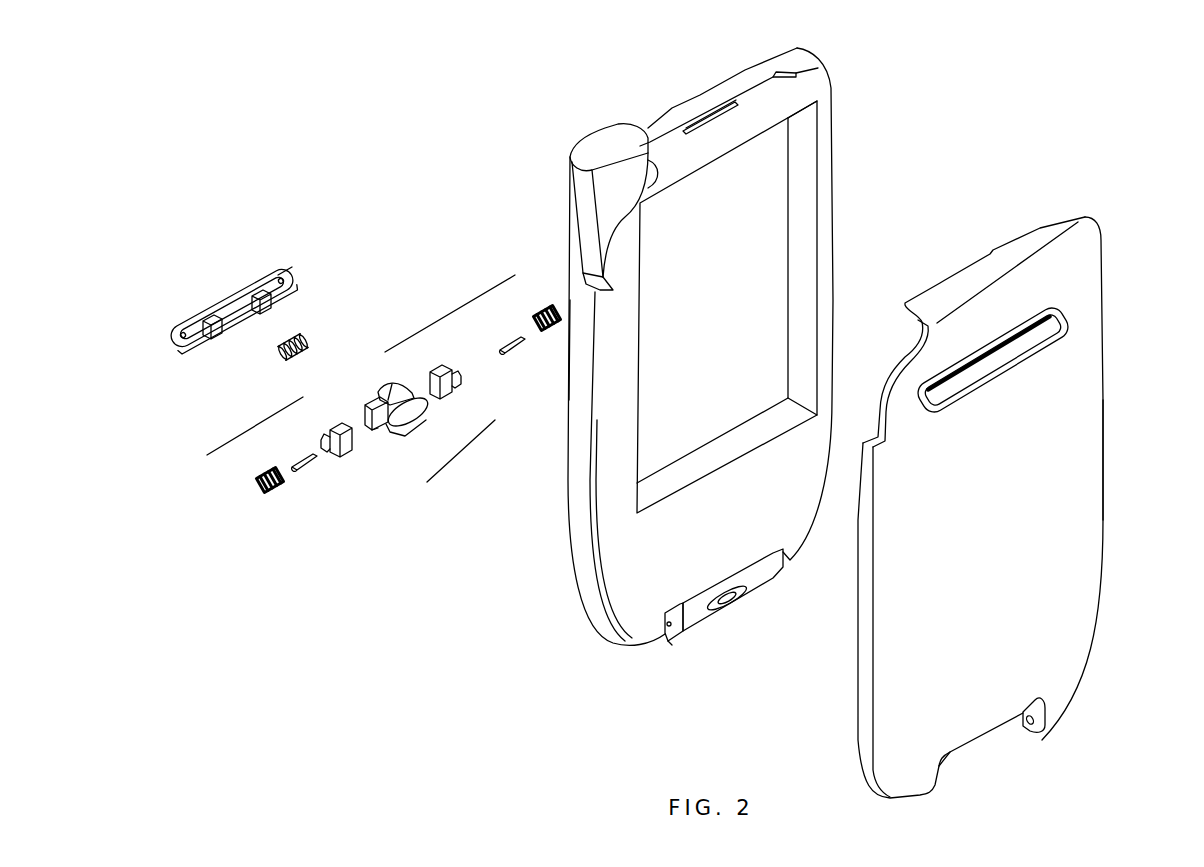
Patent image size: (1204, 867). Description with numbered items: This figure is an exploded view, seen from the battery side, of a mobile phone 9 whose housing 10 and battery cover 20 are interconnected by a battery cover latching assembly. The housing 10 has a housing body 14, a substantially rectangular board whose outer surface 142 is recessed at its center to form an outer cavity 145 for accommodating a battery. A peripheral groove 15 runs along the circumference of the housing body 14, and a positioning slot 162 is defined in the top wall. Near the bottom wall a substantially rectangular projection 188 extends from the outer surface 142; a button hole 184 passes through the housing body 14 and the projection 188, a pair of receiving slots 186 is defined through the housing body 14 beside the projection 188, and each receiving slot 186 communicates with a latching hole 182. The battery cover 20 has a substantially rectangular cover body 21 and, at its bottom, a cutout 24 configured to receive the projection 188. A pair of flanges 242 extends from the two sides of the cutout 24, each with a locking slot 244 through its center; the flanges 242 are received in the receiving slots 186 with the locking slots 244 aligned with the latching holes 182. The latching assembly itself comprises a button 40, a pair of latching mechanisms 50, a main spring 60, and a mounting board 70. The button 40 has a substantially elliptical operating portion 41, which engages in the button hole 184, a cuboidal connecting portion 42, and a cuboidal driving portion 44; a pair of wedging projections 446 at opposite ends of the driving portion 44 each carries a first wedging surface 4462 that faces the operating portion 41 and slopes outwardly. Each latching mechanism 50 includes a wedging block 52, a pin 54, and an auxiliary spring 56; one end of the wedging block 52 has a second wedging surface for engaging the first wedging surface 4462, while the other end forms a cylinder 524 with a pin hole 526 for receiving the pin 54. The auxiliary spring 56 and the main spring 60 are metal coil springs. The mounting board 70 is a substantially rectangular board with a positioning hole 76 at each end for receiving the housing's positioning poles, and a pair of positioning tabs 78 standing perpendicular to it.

The mobile phone 9 is at (453, 74).
The housing 10 is at (838, 94).
The housing body 14 is at (601, 534).
The outer surface 142 is at (650, 560).
The outer cavity 145 is at (768, 199).
The peripheral groove 15 is at (590, 489).
The positioning slot 162 is at (710, 108).
The latching hole 182 is at (665, 628).
The button hole 184 is at (725, 605).
The receiving slot 186 is at (671, 639).
The projection 188 is at (765, 575).
The battery cover 20 is at (1110, 230).
The cover body 21 is at (1083, 467).
The cutout 24 is at (991, 745).
The flange 242 is at (1046, 716).
The locking slot 244 is at (1034, 727).
The button 40 is at (409, 432).
The operating portion 41 is at (415, 405).
The connecting portion 42 is at (405, 430).
The driving portion 44 is at (393, 422).
The wedging projection 446 is at (368, 412).
The first wedging surface 4462 is at (378, 428).
The latching mechanism 50 is at (384, 390).
The wedging block 52 is at (432, 368).
The cylinder 524 is at (460, 378).
The pin hole 526 is at (328, 450).
The pin 54 is at (515, 335).
The auxiliary spring 56 is at (542, 311).
The main spring 60 is at (297, 343).
The mounting board 70 is at (277, 268).
The positioning hole 76 is at (287, 283).
The positioning tab 78 is at (250, 295).